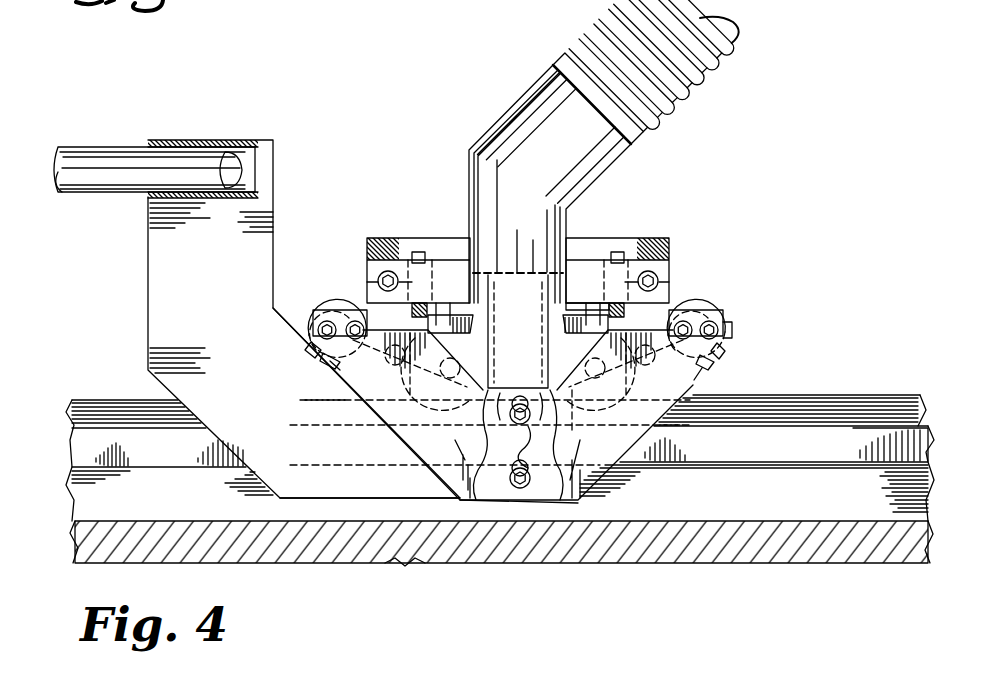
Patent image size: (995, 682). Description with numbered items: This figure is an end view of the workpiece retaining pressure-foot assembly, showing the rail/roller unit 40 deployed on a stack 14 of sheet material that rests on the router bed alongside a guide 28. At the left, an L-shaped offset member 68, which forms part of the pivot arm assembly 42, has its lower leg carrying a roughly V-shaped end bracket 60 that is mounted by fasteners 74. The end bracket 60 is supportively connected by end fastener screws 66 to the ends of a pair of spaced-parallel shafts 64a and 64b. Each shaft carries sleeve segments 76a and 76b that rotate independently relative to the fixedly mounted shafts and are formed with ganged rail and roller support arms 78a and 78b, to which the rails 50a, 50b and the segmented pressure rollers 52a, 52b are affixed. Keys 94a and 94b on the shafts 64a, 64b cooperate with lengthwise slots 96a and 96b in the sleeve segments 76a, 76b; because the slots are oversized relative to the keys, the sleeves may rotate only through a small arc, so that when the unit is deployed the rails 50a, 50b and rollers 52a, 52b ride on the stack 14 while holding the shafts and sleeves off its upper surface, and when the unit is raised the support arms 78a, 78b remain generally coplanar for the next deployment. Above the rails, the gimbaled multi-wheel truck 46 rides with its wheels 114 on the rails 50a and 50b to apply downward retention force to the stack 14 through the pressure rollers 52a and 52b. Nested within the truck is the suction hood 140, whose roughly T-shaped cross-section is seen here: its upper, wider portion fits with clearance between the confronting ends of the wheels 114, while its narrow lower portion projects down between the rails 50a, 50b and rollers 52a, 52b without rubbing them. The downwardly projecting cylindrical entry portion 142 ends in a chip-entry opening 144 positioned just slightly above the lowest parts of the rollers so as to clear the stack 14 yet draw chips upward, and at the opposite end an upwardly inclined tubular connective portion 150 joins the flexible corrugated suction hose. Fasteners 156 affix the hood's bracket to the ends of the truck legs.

The stack of sheet material 14 is at (846, 396).
The guide 28 is at (837, 459).
The rail/roller unit 40 is at (652, 300).
The pivot arm assembly 42 is at (123, 128).
The gimbaled multi-wheel truck 46 is at (633, 220).
The rail 50a is at (428, 256).
The rail 50b is at (636, 266).
The pressure rollers 52a is at (502, 398).
The pressure rollers 52b is at (580, 398).
The end bracket 60 is at (392, 428).
The shaft 64a is at (340, 302).
The shaft 64b is at (720, 315).
The end fastener screw 66 is at (732, 326).
The L-shaped offset member 68 is at (148, 262).
The fastener 74 is at (534, 432).
The sleeve segment 76a is at (323, 302).
The sleeve segment 76b is at (705, 308).
The rail and roller support arm 78a is at (343, 402).
The rail and roller support arm 78b is at (682, 428).
The key 94a is at (322, 362).
The key 94b is at (712, 366).
The slot 96a is at (311, 348).
The slot 96b is at (725, 352).
The wheel 114 is at (445, 300).
The suction hood 140 is at (532, 326).
The entry portion 142 is at (578, 503).
The chip-entry opening 144 is at (501, 473).
The tubular connective portion 150 is at (535, 108).
The fastener 156 is at (413, 262).